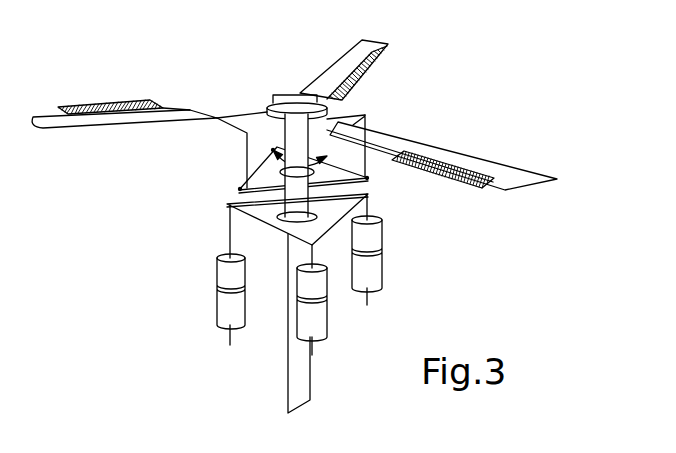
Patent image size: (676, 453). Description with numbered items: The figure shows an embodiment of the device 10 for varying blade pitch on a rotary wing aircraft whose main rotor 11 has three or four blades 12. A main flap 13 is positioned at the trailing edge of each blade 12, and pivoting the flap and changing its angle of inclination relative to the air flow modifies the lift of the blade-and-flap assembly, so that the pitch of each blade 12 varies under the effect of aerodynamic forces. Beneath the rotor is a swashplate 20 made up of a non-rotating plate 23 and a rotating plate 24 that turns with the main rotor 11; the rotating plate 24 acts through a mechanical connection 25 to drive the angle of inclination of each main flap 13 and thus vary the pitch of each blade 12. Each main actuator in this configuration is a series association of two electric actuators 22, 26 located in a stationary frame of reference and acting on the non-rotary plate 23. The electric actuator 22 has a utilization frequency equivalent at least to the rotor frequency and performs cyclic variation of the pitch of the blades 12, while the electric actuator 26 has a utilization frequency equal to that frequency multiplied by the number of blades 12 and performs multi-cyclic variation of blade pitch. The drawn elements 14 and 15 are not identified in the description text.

The device for varying blade pitch 10 is at (110, 260).
The main rotor 11 is at (242, 51).
The blade 12 is at (516, 166).
The main flap 13 is at (368, 82).
The rotor blade 14 is at (124, 114).
The shaft 15 is at (297, 168).
The swashplate 20 is at (220, 193).
The electric actuator 22 is at (396, 275).
The non-rotating plate 23 is at (266, 228).
The rotating plate 24 is at (358, 163).
The mechanical connection 25 is at (237, 147).
The electric actuator 26 is at (396, 232).